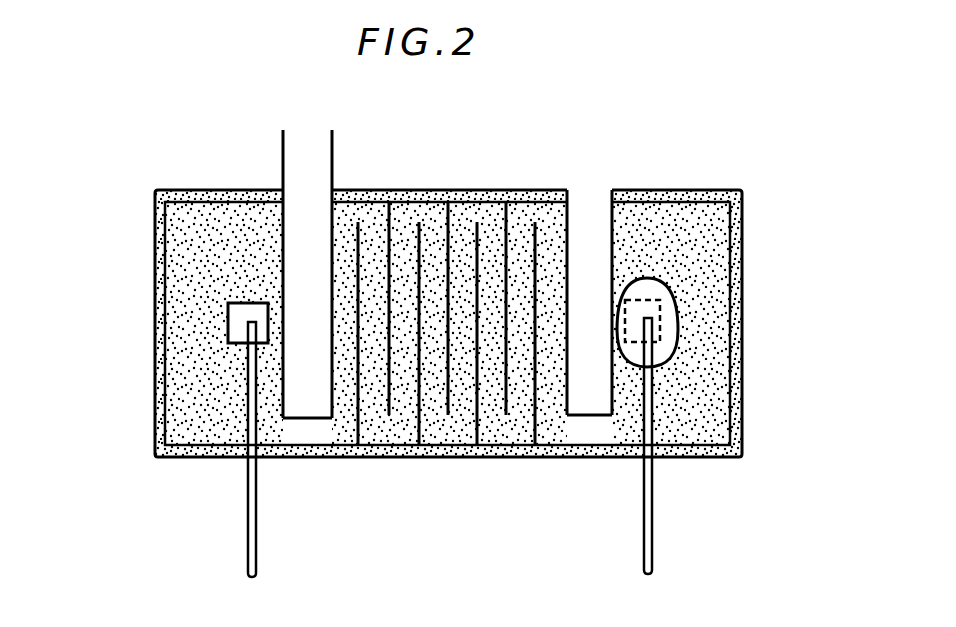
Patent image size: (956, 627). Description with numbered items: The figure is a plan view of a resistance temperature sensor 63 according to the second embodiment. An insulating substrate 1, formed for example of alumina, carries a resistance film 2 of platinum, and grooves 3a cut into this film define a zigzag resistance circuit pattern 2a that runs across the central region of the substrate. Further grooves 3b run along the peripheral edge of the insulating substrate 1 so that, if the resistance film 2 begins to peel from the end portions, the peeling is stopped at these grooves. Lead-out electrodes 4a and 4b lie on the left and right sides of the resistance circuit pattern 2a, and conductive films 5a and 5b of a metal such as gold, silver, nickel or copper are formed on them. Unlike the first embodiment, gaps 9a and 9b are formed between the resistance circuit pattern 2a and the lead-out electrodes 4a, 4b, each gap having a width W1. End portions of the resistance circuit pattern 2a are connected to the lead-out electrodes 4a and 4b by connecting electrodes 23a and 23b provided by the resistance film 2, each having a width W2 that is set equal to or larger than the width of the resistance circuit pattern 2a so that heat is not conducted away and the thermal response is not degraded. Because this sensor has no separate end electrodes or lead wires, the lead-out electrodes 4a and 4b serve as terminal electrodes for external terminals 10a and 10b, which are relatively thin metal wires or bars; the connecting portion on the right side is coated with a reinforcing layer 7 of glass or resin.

The insulating substrate 1 is at (745, 222).
The resistance film 2 is at (456, 230).
The resistance circuit pattern 2a is at (467, 423).
The grooves 3a is at (358, 423).
The grooves 3b is at (197, 200).
The lead-out electrode 4a is at (198, 263).
The lead-out electrode 4b is at (710, 268).
The conductive film 5a is at (243, 317).
The conductive film 5b is at (667, 333).
The reinforcing layer 7 is at (655, 337).
The gap 9a is at (312, 205).
The gap 9b is at (580, 205).
The external terminal 10a is at (256, 557).
The external terminal 10b is at (652, 520).
The connecting electrode 23a is at (272, 458).
The connecting electrode 23b is at (595, 433).
The resistance temperature sensor 63 is at (715, 106).
The width of gap W1 is at (339, 140).
The width of connecting electrode W2 is at (308, 390).